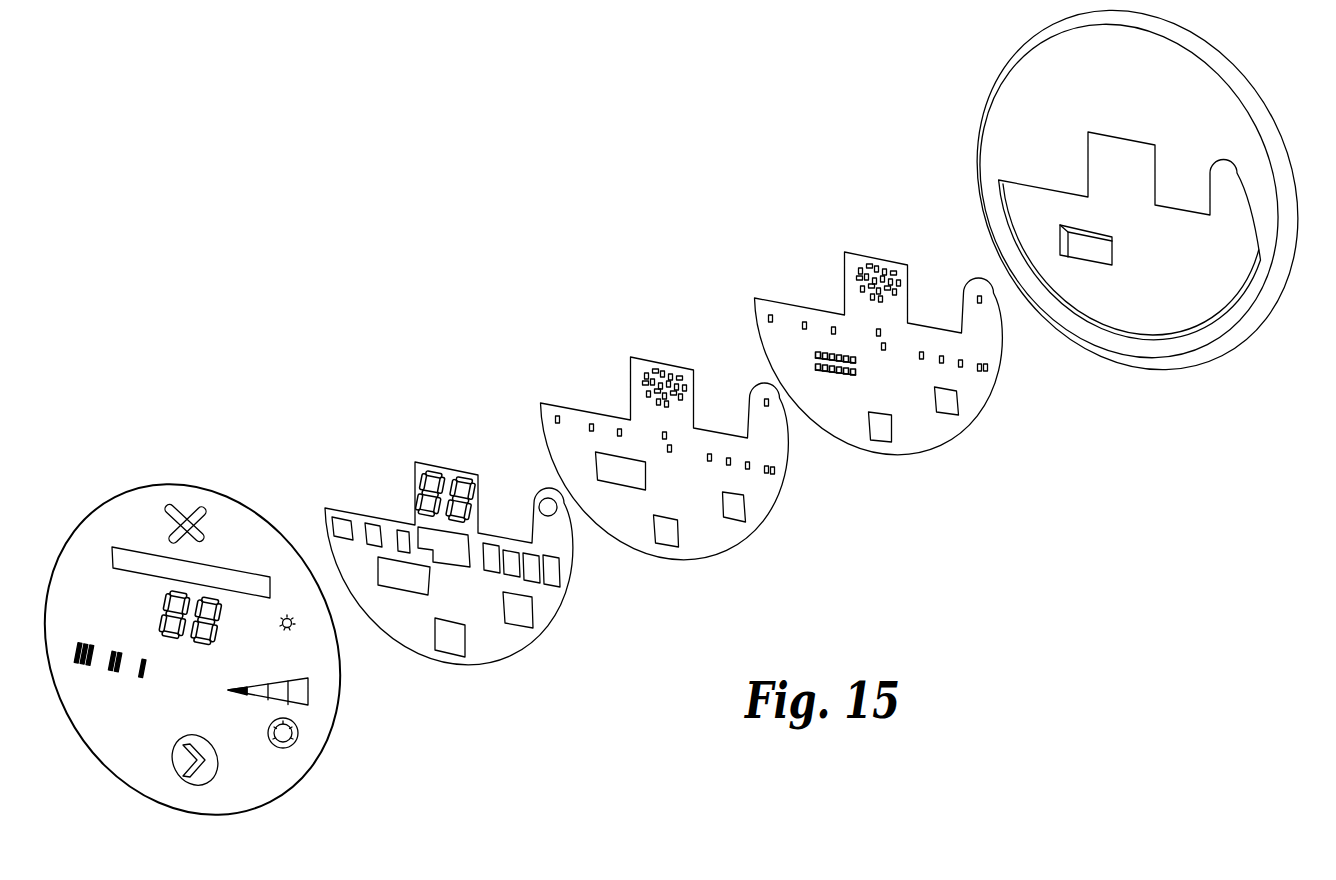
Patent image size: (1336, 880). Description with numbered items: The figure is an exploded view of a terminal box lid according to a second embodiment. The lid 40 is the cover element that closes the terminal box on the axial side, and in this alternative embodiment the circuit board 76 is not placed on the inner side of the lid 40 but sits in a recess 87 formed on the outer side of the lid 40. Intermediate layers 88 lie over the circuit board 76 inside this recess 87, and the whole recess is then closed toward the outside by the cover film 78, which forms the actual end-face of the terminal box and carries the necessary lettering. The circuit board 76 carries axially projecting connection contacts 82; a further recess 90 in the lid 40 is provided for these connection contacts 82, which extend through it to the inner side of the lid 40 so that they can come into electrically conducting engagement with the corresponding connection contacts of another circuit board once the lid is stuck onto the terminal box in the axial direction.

The lid 40 is at (1120, 216).
The circuit board 76 is at (930, 440).
The cover film 78 is at (295, 767).
The connection contacts 82 is at (845, 353).
The recess 87 is at (1172, 305).
The intermediate layers 88 is at (628, 388).
The recess 90 is at (1090, 247).